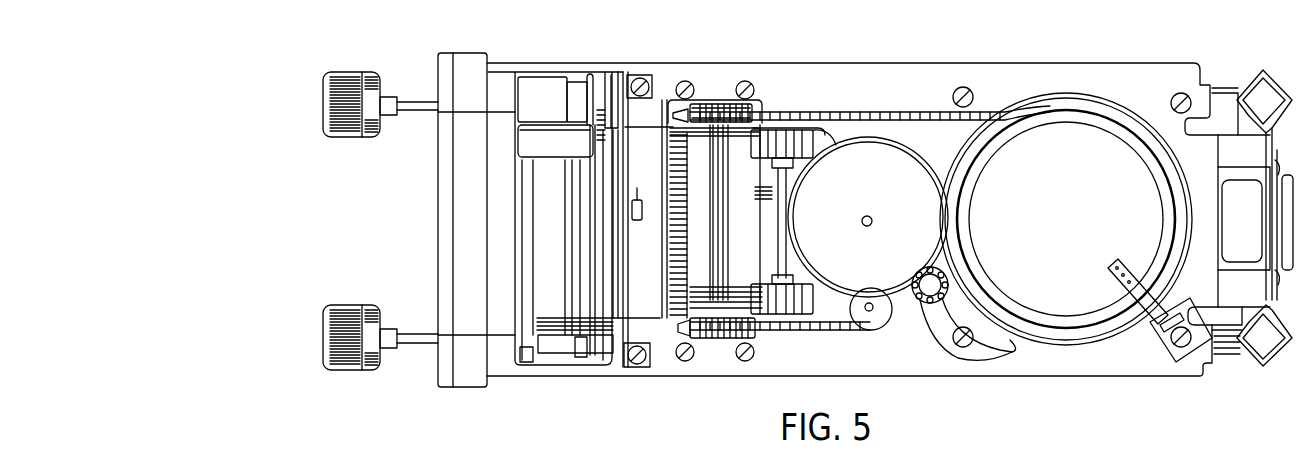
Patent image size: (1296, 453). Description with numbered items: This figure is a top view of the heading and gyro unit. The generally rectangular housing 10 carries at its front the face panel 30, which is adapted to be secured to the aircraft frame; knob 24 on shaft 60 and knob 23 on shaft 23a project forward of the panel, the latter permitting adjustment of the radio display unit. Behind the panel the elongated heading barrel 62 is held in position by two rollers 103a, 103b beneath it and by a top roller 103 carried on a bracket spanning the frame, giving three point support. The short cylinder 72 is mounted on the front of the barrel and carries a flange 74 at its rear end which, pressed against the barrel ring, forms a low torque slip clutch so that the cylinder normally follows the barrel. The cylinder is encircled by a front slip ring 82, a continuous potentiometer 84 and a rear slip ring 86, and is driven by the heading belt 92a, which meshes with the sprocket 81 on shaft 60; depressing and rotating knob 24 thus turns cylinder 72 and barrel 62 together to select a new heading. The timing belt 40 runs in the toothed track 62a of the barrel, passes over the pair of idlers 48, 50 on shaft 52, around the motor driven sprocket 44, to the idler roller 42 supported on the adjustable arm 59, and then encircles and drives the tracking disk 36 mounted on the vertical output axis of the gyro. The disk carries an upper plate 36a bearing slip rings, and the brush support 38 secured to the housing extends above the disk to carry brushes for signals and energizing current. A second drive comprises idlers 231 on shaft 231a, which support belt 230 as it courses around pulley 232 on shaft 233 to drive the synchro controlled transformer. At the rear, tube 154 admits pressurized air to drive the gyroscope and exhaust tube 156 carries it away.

The housing 10 is at (822, 62).
The knob 23 is at (321, 104).
The shaft 23a is at (413, 100).
The knob 24 is at (321, 339).
The face panel 30 is at (437, 212).
The tracking disk 36 is at (976, 154).
The upper plate 36a is at (1066, 219).
The brush support 38 is at (1118, 263).
The timing belt 40 is at (935, 110).
The idler roller 42 is at (936, 305).
The motor driven sprocket 44 is at (870, 320).
The idler 48 is at (715, 340).
The idler 50 is at (702, 103).
The shaft 52 is at (738, 103).
The adjustable arm 59 is at (1012, 353).
The shaft 60 is at (415, 331).
The barrel 62 is at (712, 209).
The toothed track 62a is at (667, 330).
The short cylinder 72 is at (561, 217).
The flange 74 is at (607, 72).
The sprocket 81 is at (540, 347).
The front ring 82 is at (575, 267).
The center ring 84 is at (578, 282).
The rear ring 86 is at (590, 293).
The heading belt 92a is at (527, 362).
The top roller 103 is at (640, 200).
The roller 103a is at (627, 74).
The roller 103b is at (638, 368).
The tube 154 is at (1240, 350).
The exhaust tube 156 is at (1228, 88).
The belt 230 is at (838, 115).
The idlers 231 is at (808, 130).
The shaft 231a is at (796, 177).
The pulley 232 is at (868, 217).
The shaft 233 is at (873, 219).